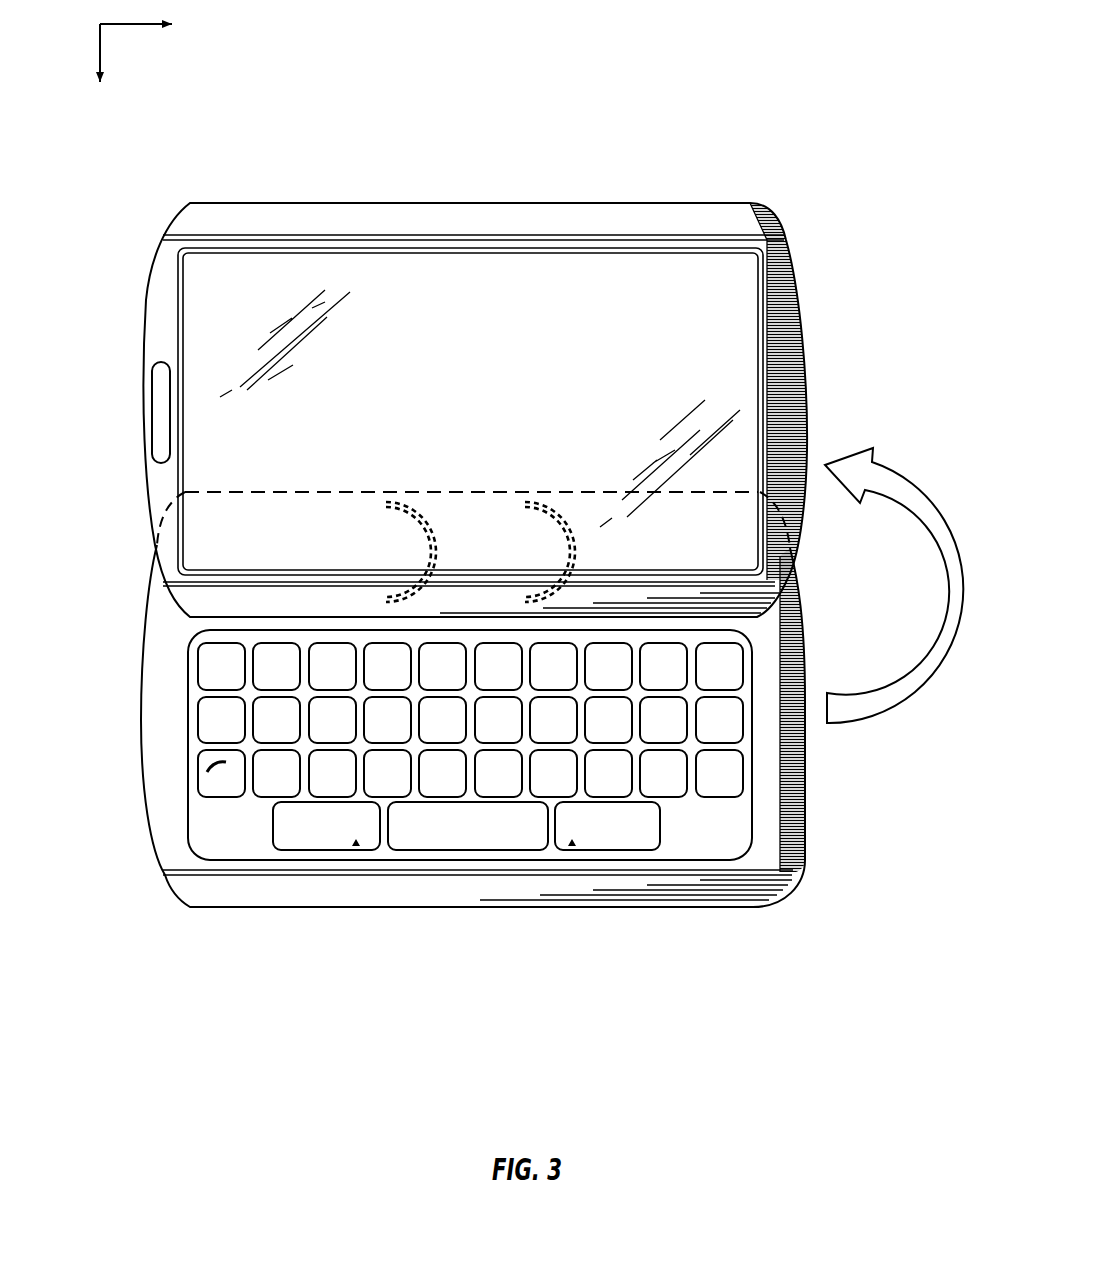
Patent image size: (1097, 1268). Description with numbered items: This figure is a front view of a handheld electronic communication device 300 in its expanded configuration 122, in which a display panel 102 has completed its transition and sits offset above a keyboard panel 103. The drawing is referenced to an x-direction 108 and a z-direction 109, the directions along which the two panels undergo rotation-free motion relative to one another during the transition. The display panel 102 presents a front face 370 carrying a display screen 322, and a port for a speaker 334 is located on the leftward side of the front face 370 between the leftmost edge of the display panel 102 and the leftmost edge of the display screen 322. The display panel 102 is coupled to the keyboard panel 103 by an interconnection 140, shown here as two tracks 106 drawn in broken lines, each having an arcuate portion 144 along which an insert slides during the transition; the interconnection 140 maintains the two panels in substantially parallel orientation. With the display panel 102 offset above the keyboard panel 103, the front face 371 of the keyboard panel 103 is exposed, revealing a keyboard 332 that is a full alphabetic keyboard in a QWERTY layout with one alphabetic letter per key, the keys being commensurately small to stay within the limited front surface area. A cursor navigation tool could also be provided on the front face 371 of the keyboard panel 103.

The handheld electronic communication device 300 is at (788, 77).
The display panel 102 is at (357, 225).
The keyboard panel 103 is at (358, 885).
The x-direction 108 is at (208, 22).
The z-direction 109 is at (122, 105).
The expanded configuration 122 is at (835, 175).
The front face 370 is at (685, 242).
The display screen 322 is at (725, 337).
The speaker 334 is at (160, 410).
The interconnection 140 is at (452, 417).
The track 106 is at (392, 500).
The arcuate portion 144 is at (568, 548).
The front face 371 is at (167, 693).
The keyboard 332 is at (228, 832).